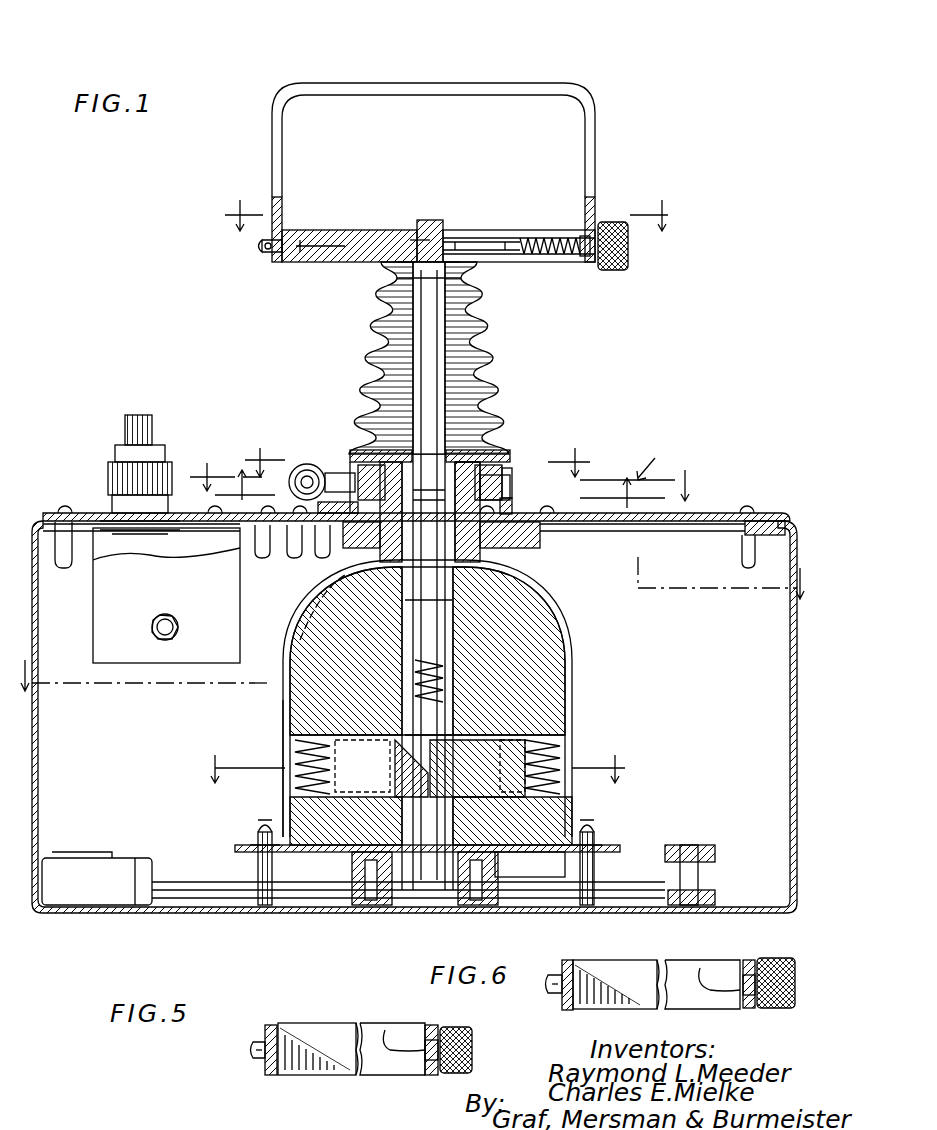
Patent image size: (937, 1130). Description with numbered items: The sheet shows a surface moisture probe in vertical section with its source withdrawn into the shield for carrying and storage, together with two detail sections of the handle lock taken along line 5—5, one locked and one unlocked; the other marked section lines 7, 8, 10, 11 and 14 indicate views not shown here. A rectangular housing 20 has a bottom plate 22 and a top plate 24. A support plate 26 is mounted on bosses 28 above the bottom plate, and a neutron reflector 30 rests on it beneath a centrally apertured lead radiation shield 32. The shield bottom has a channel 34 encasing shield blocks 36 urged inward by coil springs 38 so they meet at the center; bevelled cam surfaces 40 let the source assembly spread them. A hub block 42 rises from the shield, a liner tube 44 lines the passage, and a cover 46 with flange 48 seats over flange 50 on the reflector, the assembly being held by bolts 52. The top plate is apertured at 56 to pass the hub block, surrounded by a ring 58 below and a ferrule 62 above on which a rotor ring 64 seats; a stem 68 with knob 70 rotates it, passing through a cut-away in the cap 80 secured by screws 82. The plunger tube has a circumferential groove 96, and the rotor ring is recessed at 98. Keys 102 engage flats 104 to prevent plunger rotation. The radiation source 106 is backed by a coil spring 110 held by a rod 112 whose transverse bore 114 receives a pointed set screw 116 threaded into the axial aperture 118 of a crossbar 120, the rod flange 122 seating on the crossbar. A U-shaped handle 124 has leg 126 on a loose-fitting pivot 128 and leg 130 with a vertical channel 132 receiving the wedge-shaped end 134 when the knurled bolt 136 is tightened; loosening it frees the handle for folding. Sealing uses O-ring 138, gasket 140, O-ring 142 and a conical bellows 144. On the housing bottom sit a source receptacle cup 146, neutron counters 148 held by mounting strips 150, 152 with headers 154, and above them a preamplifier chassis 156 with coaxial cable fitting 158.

In FIG. 1, the rectangular housing 20 is at (656, 455).
In FIG. 1, the bottom plate 22 is at (215, 913).
In FIG. 1, the top plate 24 is at (706, 513).
In FIG. 1, the support plate 26 is at (520, 856).
In FIG. 1, the bosses 28 is at (255, 876).
In FIG. 1, the neutron reflector 30 is at (566, 820).
In FIG. 1, the lead radiation shield 32 is at (570, 655).
In FIG. 1, the rectangular groove or channel 34 is at (456, 747).
In FIG. 1, the shield blocks 36 is at (565, 740).
In FIG. 1, the coil springs 38 is at (295, 760).
In FIG. 1, the bevelled cam surfaces 40 is at (470, 738).
In FIG. 1, the hub block 42 is at (482, 572).
In FIG. 1, the liner tube 44 is at (300, 598).
In FIG. 1, the cover 46 is at (545, 612).
In FIG. 1, the flange 48 is at (598, 832).
In FIG. 1, the flange 50 is at (265, 822).
In FIG. 1, the bolts 52 is at (255, 832).
In FIG. 1, the aperture 56 is at (338, 497).
In FIG. 1, the ring 58 is at (542, 549).
In FIG. 1, the ferrule 62 is at (513, 505).
In FIG. 1, the rotor ring 64 is at (500, 465).
In FIG. 1, the stem 68 is at (340, 474).
In FIG. 1, the knob 70 is at (305, 465).
In FIG. 1, the inverted cup-shaped cap 80 is at (512, 488).
In FIG. 1, the screws 82 is at (372, 445).
In FIG. 1, the circumferential groove 96 is at (429, 576).
In FIG. 1, the recess 98 is at (509, 468).
In FIG. 1, the keys 102 is at (500, 448).
In FIG. 1, the flats 104 is at (368, 358).
In FIG. 1, the radiation source 106 is at (405, 714).
In FIG. 1, the coil spring 110 is at (447, 684).
In FIG. 1, the rod 112 is at (446, 645).
In FIG. 1, the transverse bore 114 is at (410, 244).
In FIG. 1, the pointed set screw 116 is at (470, 240).
In FIG. 1, the long axial aperture 118 is at (515, 262).
In FIG. 1, the crossbar 120 is at (348, 244).
In FIG. 5, the crossbar 120 is at (320, 1072).
In FIG. 6, the crossbar 120 is at (640, 995).
In FIG. 1, the flange 122 is at (436, 224).
In FIG. 1, the U-shaped handle 124 is at (330, 95).
In FIG. 1, the leg 126 is at (272, 162).
In FIG. 5, the leg 126 is at (296, 1006).
In FIG. 6, the leg 126 is at (578, 968).
In FIG. 1, the loose-fitting pivot 128 is at (262, 254).
In FIG. 5, the loose-fitting pivot 128 is at (255, 1056).
In FIG. 6, the loose-fitting pivot 128 is at (556, 974).
In FIG. 1, the leg 130 is at (595, 160).
In FIG. 5, the leg 130 is at (432, 1032).
In FIG. 6, the leg 130 is at (748, 1008).
In FIG. 1, the vertical channel 132 is at (562, 236).
In FIG. 5, the vertical channel 132 is at (428, 1068).
In FIG. 6, the vertical channel 132 is at (751, 968).
In FIG. 1, the wedge-shaped end 134 is at (585, 262).
In FIG. 5, the wedge-shaped end 134 is at (388, 1042).
In FIG. 6, the wedge-shaped end 134 is at (708, 972).
In FIG. 1, the knurled bolt 136 is at (630, 262).
In FIG. 5, the knurled bolt 136 is at (474, 1040).
In FIG. 6, the knurled bolt 136 is at (782, 946).
In FIG. 1, the O-ring 138 is at (352, 560).
In FIG. 1, the gasket 140 is at (496, 458).
In FIG. 1, the O-ring 142 is at (424, 235).
In FIG. 1, the bellows 144 is at (380, 300).
In FIG. 1, the source receptacle cup 146 is at (400, 907).
In FIG. 1, the neutron counters 148 is at (182, 866).
In FIG. 1, the mounting strip 150 is at (714, 858).
In FIG. 1, the mounting strip 152 is at (716, 896).
In FIG. 1, the header 154 is at (105, 862).
In FIG. 1, the preamplifier chassis 156 is at (166, 595).
In FIG. 1, the coaxial cable fitting 158 is at (108, 500).
In FIG. 1, the section line 5— 5 is at (451, 215).
In FIG. 1, the section line 7- 7 is at (415, 619).
In FIG. 1, the section line 8- 8 is at (416, 769).
In FIG. 1, the section line 10- 10 is at (447, 475).
In FIG. 1, the section line 11- 11 is at (420, 451).
In FIG. 1, the section line 14- 14 is at (439, 490).